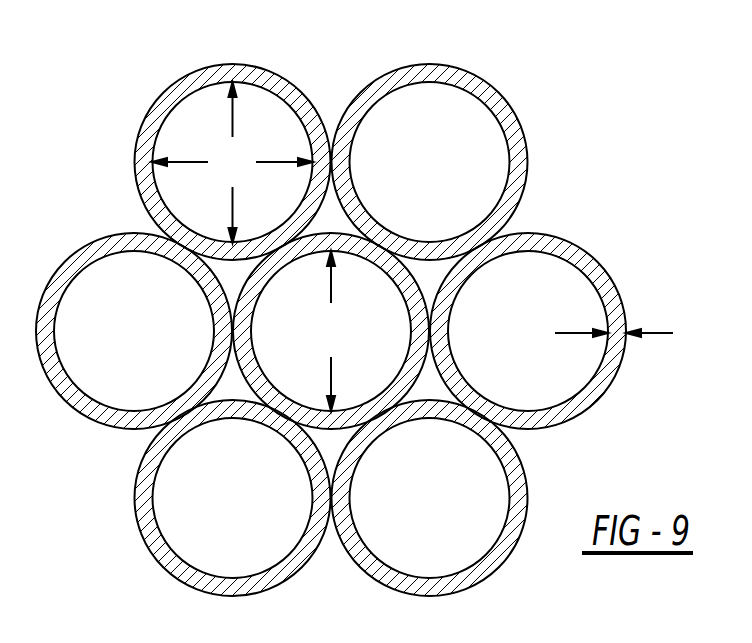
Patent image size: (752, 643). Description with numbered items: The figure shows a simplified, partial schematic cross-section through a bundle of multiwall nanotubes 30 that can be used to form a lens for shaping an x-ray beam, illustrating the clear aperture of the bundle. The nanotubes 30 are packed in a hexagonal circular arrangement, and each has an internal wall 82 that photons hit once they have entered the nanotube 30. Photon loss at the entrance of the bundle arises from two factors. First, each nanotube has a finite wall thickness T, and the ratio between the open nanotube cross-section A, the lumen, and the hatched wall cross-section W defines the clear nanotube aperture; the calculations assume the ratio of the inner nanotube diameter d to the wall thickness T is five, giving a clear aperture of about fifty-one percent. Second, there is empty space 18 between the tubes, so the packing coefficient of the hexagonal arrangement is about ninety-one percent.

The nanotube 30 is at (473, 73).
The internal wall 82 is at (430, 243).
The empty space 18 is at (237, 273).
The open nanotube cross-section A is at (232, 162).
The inner nanotube diameter d is at (331, 331).
The wall thickness T is at (624, 334).
The wall cross-section W is at (582, 400).